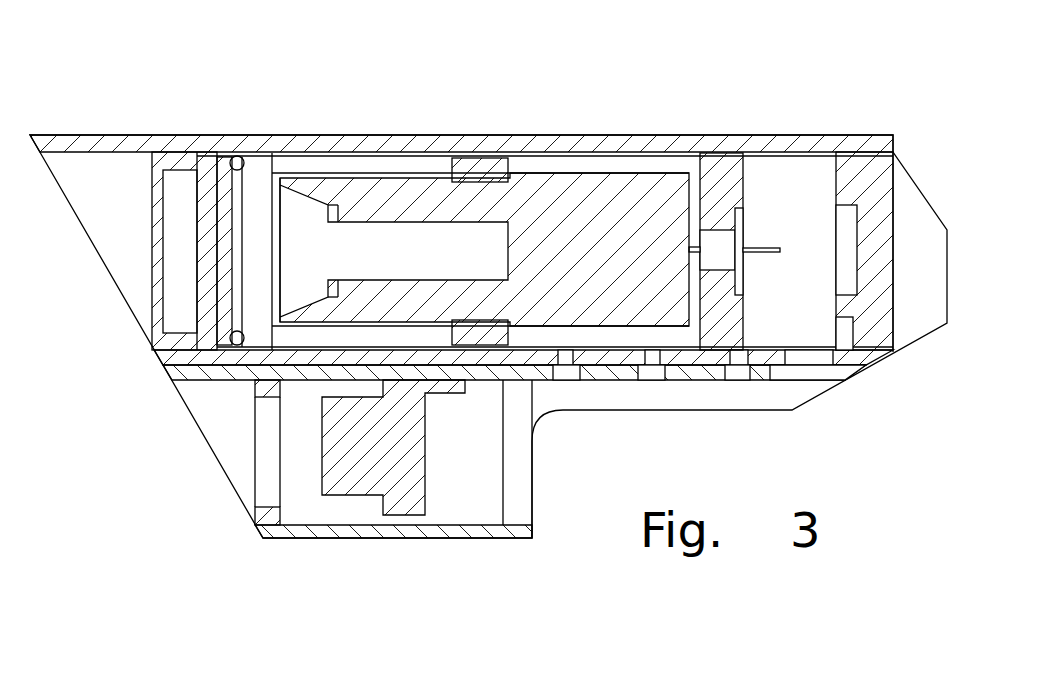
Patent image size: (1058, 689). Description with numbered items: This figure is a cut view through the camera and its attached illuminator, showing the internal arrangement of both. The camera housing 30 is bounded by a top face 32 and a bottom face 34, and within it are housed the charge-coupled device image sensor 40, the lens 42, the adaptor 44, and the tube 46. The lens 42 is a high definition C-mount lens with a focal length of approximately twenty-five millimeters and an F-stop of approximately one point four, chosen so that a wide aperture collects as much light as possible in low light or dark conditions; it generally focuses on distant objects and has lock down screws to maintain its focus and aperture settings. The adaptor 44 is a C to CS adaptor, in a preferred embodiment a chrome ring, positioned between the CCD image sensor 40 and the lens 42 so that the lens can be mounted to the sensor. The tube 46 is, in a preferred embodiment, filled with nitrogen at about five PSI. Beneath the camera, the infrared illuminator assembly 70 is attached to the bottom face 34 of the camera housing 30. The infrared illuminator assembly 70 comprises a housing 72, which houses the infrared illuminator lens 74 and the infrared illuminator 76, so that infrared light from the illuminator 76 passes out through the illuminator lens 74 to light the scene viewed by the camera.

The camera housing 30 is at (114, 88).
The top face 32 is at (367, 135).
The bottom face 34 is at (877, 362).
The charge-coupled device (CCD) image sensor 40 is at (258, 197).
The lens 42 is at (212, 302).
The adaptor 44 is at (237, 156).
The tube 46 is at (498, 232).
The infrared illuminator assembly 70 is at (375, 510).
The housing 72 is at (495, 538).
The infrared illuminator lens 74 is at (253, 468).
The infrared illuminator 76 is at (348, 475).